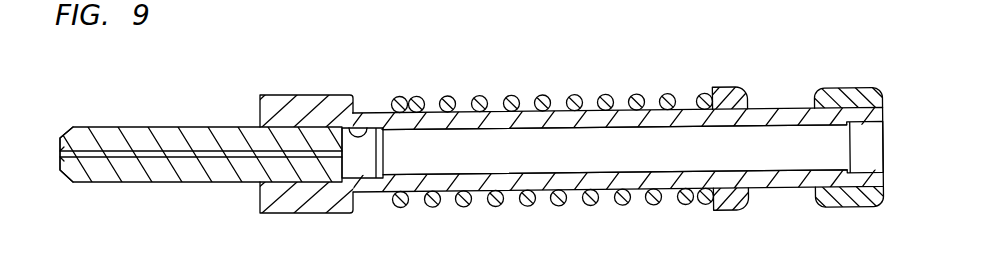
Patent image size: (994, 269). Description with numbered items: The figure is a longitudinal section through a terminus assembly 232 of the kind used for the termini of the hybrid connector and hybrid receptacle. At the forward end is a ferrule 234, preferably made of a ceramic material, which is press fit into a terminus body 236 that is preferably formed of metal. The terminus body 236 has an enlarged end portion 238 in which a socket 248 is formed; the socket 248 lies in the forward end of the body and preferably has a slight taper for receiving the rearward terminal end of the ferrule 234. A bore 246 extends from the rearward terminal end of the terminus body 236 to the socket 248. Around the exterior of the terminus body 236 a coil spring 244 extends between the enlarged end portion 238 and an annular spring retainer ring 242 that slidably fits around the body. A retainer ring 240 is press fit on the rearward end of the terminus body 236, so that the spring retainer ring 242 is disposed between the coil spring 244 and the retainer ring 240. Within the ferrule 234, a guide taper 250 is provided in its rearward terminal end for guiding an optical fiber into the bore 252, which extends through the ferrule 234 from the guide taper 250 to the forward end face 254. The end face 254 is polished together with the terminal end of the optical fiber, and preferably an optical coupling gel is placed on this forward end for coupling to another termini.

The terminus assembly 232 is at (157, 62).
The ferrule 234 is at (123, 128).
The terminus body 236 is at (767, 187).
The enlarged end portion 238 is at (270, 95).
The retainer ring 240 is at (831, 91).
The spring retainer ring 242 is at (727, 91).
The coil spring 244 is at (542, 96).
The bore 246 is at (763, 130).
The socket 248 is at (368, 122).
The guide taper 250 is at (340, 162).
The bore 252 is at (148, 158).
The forward end face 254 is at (62, 158).